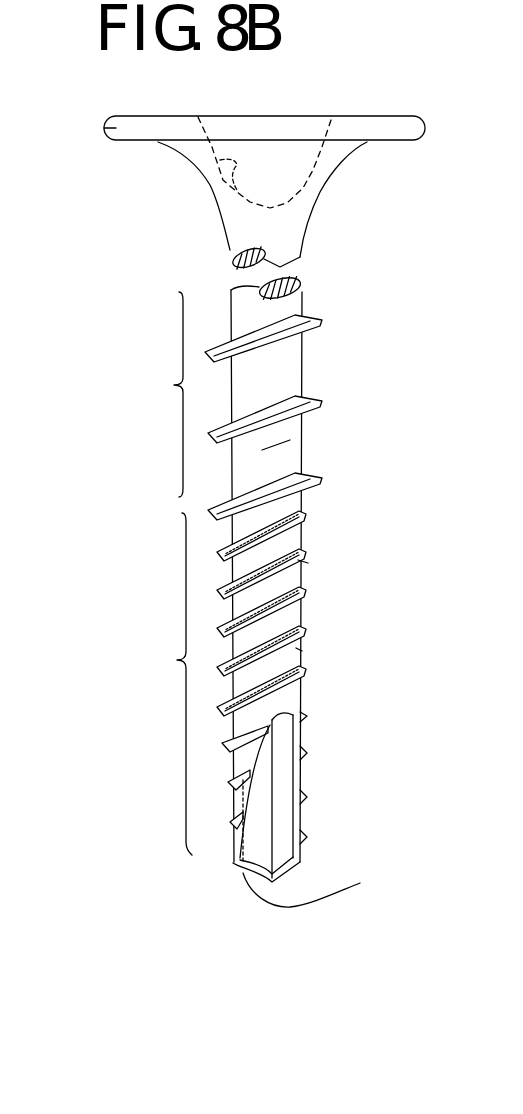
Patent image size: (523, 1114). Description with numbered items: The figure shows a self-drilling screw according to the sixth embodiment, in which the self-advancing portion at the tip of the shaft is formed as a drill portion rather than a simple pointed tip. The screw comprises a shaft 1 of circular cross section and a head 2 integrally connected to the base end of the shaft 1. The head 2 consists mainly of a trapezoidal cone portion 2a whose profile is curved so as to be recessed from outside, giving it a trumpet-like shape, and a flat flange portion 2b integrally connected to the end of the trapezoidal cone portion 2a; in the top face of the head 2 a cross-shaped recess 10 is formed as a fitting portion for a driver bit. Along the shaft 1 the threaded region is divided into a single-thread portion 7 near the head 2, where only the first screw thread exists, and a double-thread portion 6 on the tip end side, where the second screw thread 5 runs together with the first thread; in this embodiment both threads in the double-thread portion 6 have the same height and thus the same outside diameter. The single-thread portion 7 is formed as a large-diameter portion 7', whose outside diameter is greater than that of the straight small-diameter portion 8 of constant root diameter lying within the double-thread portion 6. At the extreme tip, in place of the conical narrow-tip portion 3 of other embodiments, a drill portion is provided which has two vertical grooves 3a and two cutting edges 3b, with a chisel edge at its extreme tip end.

The shaft 1 is at (320, 376).
The head 2 is at (225, 159).
The trapezoidal cone portion 2a is at (285, 175).
The flange portion 2b is at (123, 128).
The cross-shaped recess 10 is at (207, 167).
The single-thread portion 7 is at (235, 406).
The large-diameter portion 7' is at (327, 429).
The double-thread portion 6 is at (224, 683).
The second screw thread 5 is at (307, 563).
The small-diameter portion 8 is at (300, 650).
The narrow-tip portion 3 is at (325, 809).
The vertical groove 3a is at (283, 777).
The cutting edge 3b is at (300, 882).